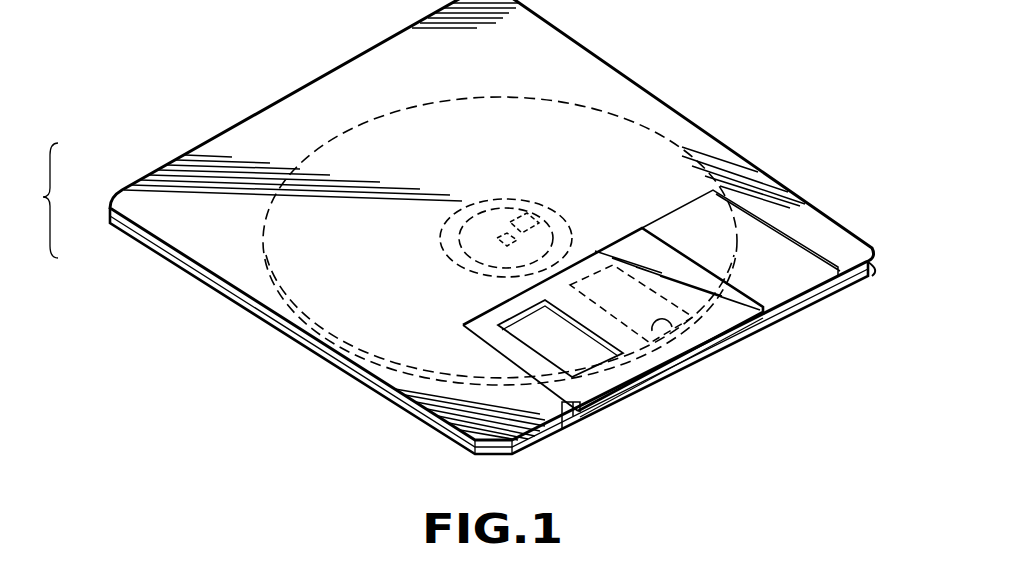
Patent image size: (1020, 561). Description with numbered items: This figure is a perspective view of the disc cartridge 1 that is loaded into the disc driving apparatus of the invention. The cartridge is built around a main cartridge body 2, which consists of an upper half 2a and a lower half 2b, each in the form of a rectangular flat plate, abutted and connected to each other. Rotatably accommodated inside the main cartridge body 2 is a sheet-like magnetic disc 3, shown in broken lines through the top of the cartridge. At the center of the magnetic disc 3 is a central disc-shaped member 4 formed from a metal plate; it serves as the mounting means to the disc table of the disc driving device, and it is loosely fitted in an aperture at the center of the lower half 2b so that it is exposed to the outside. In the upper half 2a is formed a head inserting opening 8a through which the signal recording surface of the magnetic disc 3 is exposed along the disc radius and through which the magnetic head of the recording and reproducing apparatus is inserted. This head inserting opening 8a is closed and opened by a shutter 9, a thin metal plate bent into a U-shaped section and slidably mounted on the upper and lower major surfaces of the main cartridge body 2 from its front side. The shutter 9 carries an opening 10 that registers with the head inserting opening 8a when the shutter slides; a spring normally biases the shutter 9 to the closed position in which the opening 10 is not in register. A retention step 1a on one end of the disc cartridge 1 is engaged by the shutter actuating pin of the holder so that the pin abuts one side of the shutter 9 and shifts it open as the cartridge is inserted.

The disc cartridge 1 is at (248, 147).
The retention step 1a is at (572, 418).
The main cartridge body 2 is at (41, 200).
The upper half 2a is at (134, 204).
The lower half 2b is at (117, 234).
The magnetic disc 3 is at (605, 127).
The central disc-shaped member 4 is at (542, 227).
The head inserting opening 8a is at (666, 336).
The shutter 9 is at (600, 398).
The opening 10 is at (607, 345).